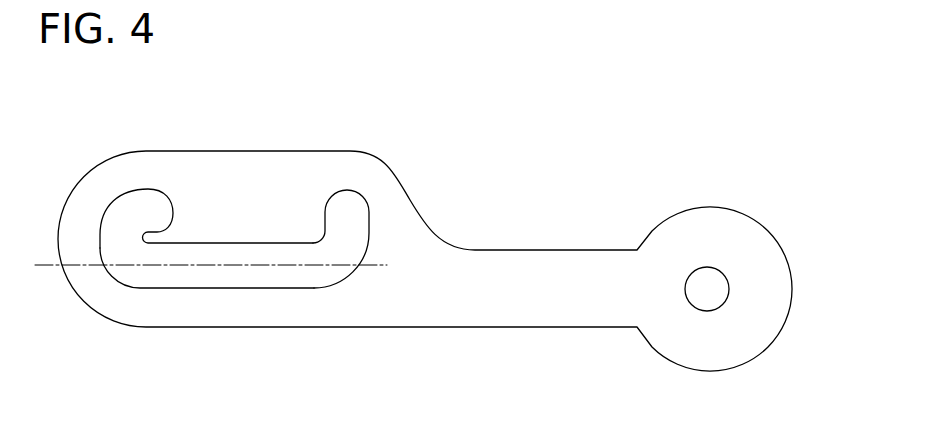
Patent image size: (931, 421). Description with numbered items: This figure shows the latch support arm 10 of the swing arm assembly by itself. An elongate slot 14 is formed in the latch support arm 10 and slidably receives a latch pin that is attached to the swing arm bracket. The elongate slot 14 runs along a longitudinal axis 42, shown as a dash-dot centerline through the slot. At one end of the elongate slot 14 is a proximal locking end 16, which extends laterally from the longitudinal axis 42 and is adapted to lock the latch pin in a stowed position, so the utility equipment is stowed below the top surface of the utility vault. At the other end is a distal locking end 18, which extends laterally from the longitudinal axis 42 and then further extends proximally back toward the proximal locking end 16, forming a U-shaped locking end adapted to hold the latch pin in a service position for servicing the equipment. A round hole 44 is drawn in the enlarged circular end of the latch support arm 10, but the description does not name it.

The latch support arm 10 is at (363, 329).
The elongate slot 14 is at (248, 290).
The proximal locking end 16 is at (325, 213).
The distal locking end 18 is at (130, 193).
The longitudinal axis 42 is at (52, 266).
The mounting hole 44 is at (729, 287).